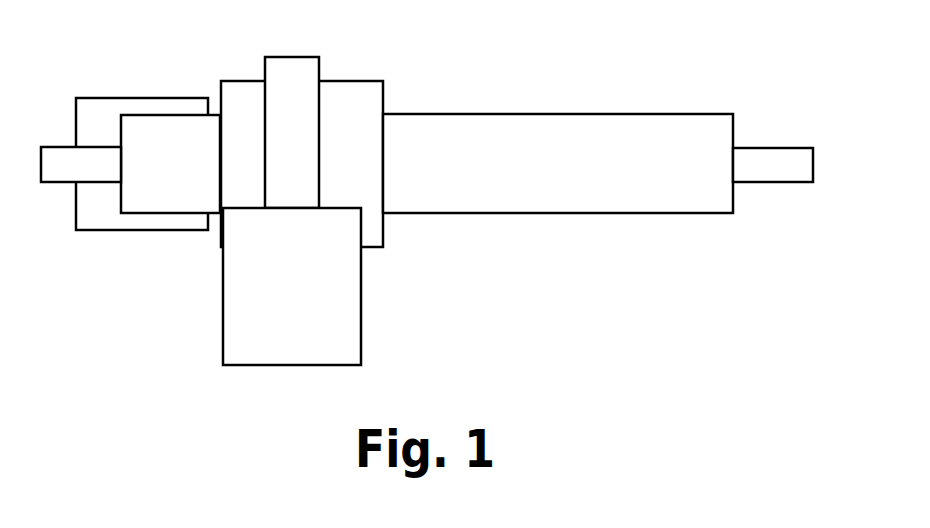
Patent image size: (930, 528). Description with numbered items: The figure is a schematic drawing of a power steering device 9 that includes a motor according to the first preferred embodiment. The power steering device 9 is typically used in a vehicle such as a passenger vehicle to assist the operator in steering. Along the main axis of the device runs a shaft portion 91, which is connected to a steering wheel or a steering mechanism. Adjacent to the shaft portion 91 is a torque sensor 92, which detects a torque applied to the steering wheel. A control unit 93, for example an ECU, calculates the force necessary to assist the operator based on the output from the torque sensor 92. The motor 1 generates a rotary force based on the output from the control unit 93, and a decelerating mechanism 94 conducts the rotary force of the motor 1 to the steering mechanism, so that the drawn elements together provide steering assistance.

The power steering device 9 is at (75, 28).
The control unit 93 is at (112, 233).
The torque sensor 92 is at (359, 80).
The decelerating mechanism 94 is at (288, 57).
The shaft portion 91 is at (680, 113).
The motor 1 is at (361, 285).